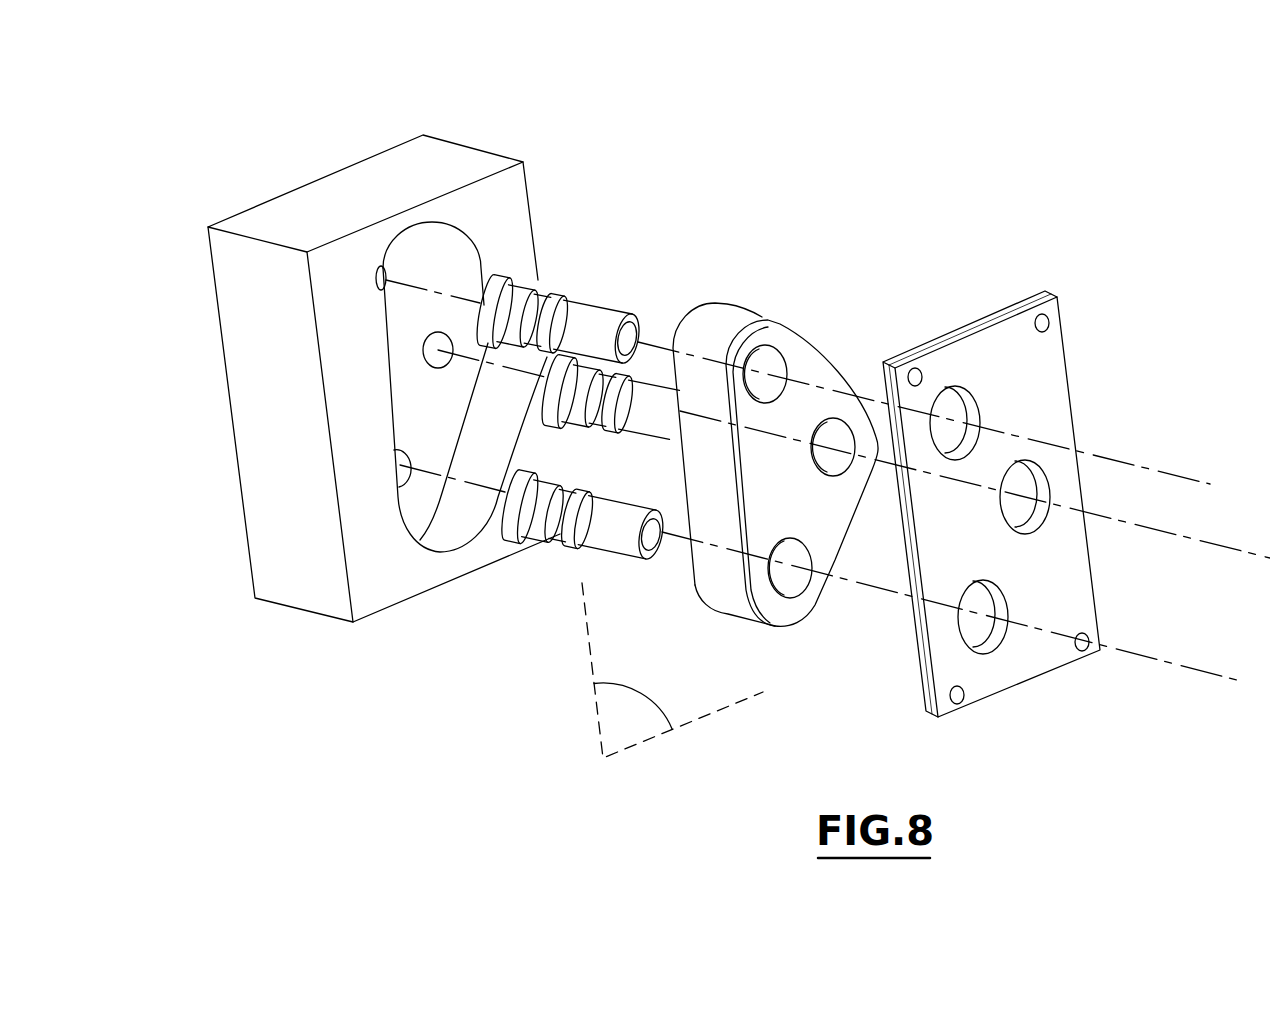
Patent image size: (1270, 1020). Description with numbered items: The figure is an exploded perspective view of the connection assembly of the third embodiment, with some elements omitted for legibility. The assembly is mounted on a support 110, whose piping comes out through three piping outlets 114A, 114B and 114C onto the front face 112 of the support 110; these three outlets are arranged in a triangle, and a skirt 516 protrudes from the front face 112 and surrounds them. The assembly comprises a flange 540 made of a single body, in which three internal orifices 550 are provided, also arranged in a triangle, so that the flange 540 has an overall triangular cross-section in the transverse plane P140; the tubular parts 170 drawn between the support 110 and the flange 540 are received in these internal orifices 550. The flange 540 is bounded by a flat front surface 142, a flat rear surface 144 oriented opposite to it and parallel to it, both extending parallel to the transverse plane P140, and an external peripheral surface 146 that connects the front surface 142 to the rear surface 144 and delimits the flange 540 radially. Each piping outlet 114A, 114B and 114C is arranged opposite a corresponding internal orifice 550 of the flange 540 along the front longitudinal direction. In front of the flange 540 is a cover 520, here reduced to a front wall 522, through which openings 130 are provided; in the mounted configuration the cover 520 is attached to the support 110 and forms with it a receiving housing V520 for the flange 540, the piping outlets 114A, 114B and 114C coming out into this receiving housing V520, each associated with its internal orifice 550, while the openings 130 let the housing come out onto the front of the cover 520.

The support 110 is at (384, 341).
The skirt 516 is at (376, 240).
The front face 112 is at (413, 260).
The receiving housing V520 is at (452, 508).
The piping outlet 114A is at (374, 277).
The piping outlet 114B is at (388, 464).
The piping outlet 114C is at (422, 355).
The tubes 170 is at (597, 517).
The flange 540 is at (739, 501).
The internal orifices 550 is at (795, 540).
The rear surface 144 is at (695, 590).
The external peripheral surface 146 is at (733, 592).
The front surface 142 is at (793, 608).
The cover 520 is at (1030, 486).
The front wall 522 is at (1042, 368).
The openings 130 is at (950, 437).
The transverse plane P140 is at (672, 670).